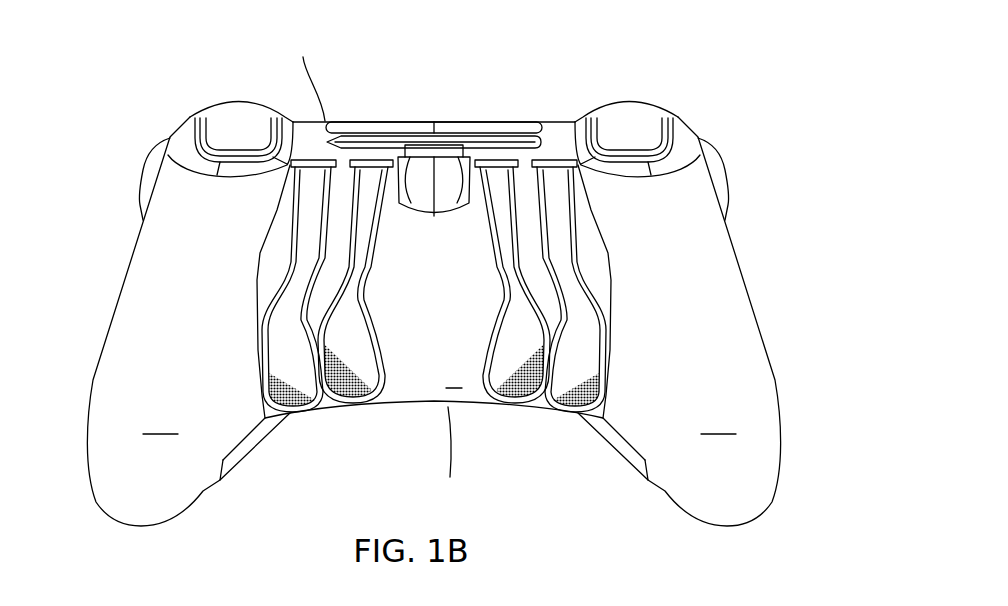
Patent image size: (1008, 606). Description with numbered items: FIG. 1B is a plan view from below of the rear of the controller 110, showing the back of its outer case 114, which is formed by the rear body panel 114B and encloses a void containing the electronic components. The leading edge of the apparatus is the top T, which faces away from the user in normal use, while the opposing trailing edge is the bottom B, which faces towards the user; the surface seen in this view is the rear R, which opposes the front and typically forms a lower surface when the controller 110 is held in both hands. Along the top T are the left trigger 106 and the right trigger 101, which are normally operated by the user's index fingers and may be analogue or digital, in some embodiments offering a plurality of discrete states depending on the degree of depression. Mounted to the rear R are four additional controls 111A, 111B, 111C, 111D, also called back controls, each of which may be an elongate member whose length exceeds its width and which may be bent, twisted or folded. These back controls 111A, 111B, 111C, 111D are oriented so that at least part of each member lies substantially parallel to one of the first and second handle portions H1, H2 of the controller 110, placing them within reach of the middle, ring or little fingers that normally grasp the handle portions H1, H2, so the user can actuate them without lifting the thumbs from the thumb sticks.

The controller 110 is at (438, 266).
The right trigger 101 is at (257, 117).
The left trigger 106 is at (627, 110).
The additional control 111A is at (307, 387).
The additional control 111B is at (365, 380).
The additional control 111C is at (513, 370).
The additional control 111D is at (573, 383).
The outer case 114 is at (420, 321).
The rear body panel 114B is at (434, 267).
The top T is at (308, 75).
The bottom B is at (450, 456).
The rear R is at (454, 376).
The first handle portion H1 is at (160, 422).
The second handle portion H2 is at (718, 422).